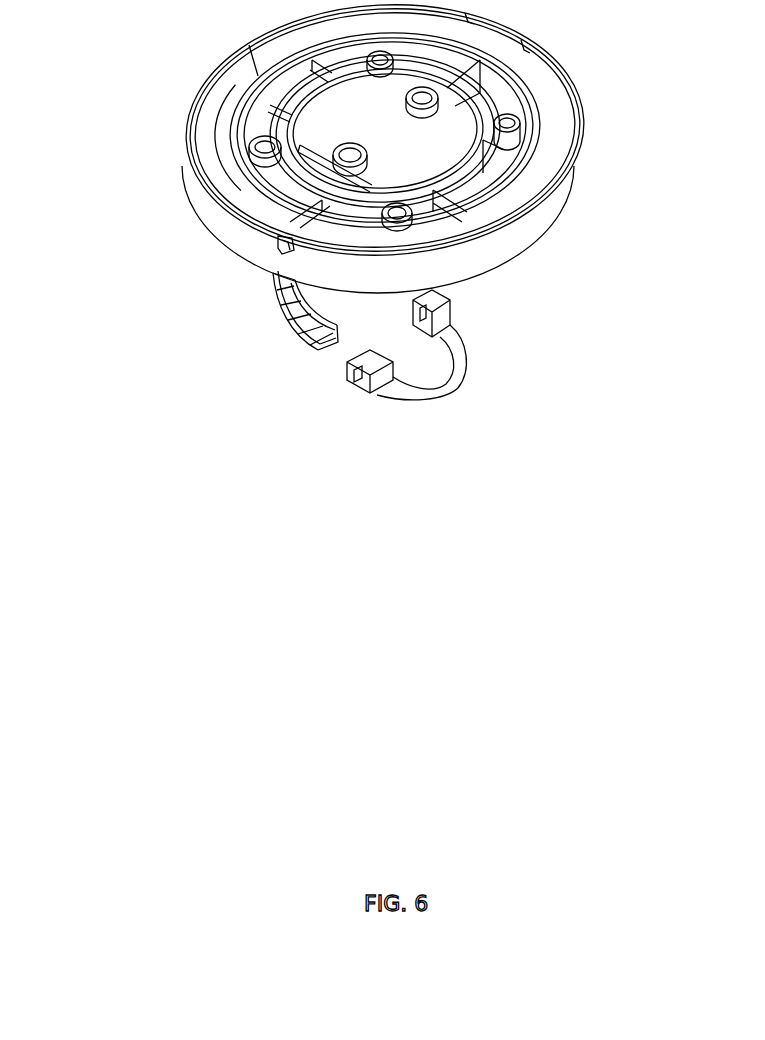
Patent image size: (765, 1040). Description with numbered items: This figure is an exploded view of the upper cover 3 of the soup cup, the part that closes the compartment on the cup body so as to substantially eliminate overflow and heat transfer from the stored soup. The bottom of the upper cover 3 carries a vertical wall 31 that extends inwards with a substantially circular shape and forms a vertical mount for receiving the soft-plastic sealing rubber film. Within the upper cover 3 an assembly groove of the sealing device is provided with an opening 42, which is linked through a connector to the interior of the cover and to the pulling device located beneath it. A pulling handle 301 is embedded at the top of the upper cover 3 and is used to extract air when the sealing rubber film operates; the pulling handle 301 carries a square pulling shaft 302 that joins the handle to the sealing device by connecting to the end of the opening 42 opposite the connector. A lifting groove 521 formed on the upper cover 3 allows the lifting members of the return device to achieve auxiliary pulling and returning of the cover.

The upper cover 3 is at (511, 243).
The vertical wall 31 is at (230, 176).
The opening 42 is at (347, 163).
The lifting groove 521 is at (274, 252).
The pulling handle 301 is at (442, 401).
The pulling shaft 302 is at (362, 404).